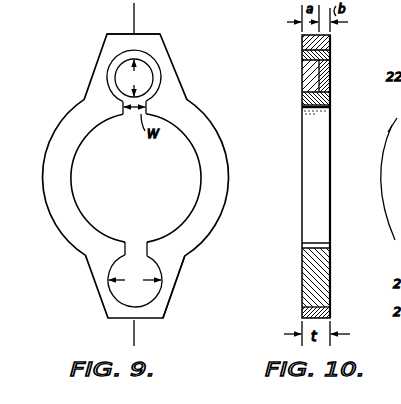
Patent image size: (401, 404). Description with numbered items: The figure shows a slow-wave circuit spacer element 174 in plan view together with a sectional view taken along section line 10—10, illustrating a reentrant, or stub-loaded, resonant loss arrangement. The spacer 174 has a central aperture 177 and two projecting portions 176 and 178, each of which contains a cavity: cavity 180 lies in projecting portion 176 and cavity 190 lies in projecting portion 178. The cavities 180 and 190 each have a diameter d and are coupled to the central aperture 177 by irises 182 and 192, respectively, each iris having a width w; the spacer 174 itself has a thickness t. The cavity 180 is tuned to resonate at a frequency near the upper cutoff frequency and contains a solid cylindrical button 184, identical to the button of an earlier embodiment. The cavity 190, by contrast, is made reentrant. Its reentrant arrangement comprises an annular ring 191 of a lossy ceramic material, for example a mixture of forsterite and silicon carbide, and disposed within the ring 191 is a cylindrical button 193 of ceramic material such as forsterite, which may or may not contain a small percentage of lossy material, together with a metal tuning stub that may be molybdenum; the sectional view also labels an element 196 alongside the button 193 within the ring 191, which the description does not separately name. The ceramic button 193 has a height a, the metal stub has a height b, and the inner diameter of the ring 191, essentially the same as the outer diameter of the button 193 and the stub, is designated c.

In FIG. 9, the section line 10— 10 is at (152, 14).
In FIG. 9, the slow-wave circuit spacer element 174 is at (210, 119).
In FIG. 10, the slow-wave circuit spacer element 174 is at (331, 226).
In FIG. 9, the projecting portion 176 is at (176, 288).
In FIG. 10, the projecting portion 176 is at (330, 310).
In FIG. 9, the central aperture 177 is at (200, 165).
In FIG. 10, the central aperture 177 is at (315, 146).
In FIG. 9, the projecting portion 178 is at (170, 58).
In FIG. 10, the projecting portion 178 is at (332, 47).
In FIG. 9, the cavity 180 is at (112, 295).
In FIG. 9, the iris 182 is at (133, 242).
In FIG. 10, the iris 182 is at (303, 247).
In FIG. 9, the solid cylindrical button 184 is at (138, 296).
In FIG. 10, the solid cylindrical button 184 is at (325, 282).
In FIG. 9, the cavity 190 is at (108, 70).
In FIG. 9, the annular ring 191 is at (158, 80).
In FIG. 10, the annular ring 191 is at (330, 100).
In FIG. 9, the iris 192 is at (123, 115).
In FIG. 10, the iris 192 is at (303, 109).
In FIG. 9, the cylindrical button 193 is at (118, 79).
In FIG. 10, the cylindrical button 193 is at (305, 80).
In FIG. 10, the insert 196 is at (328, 78).